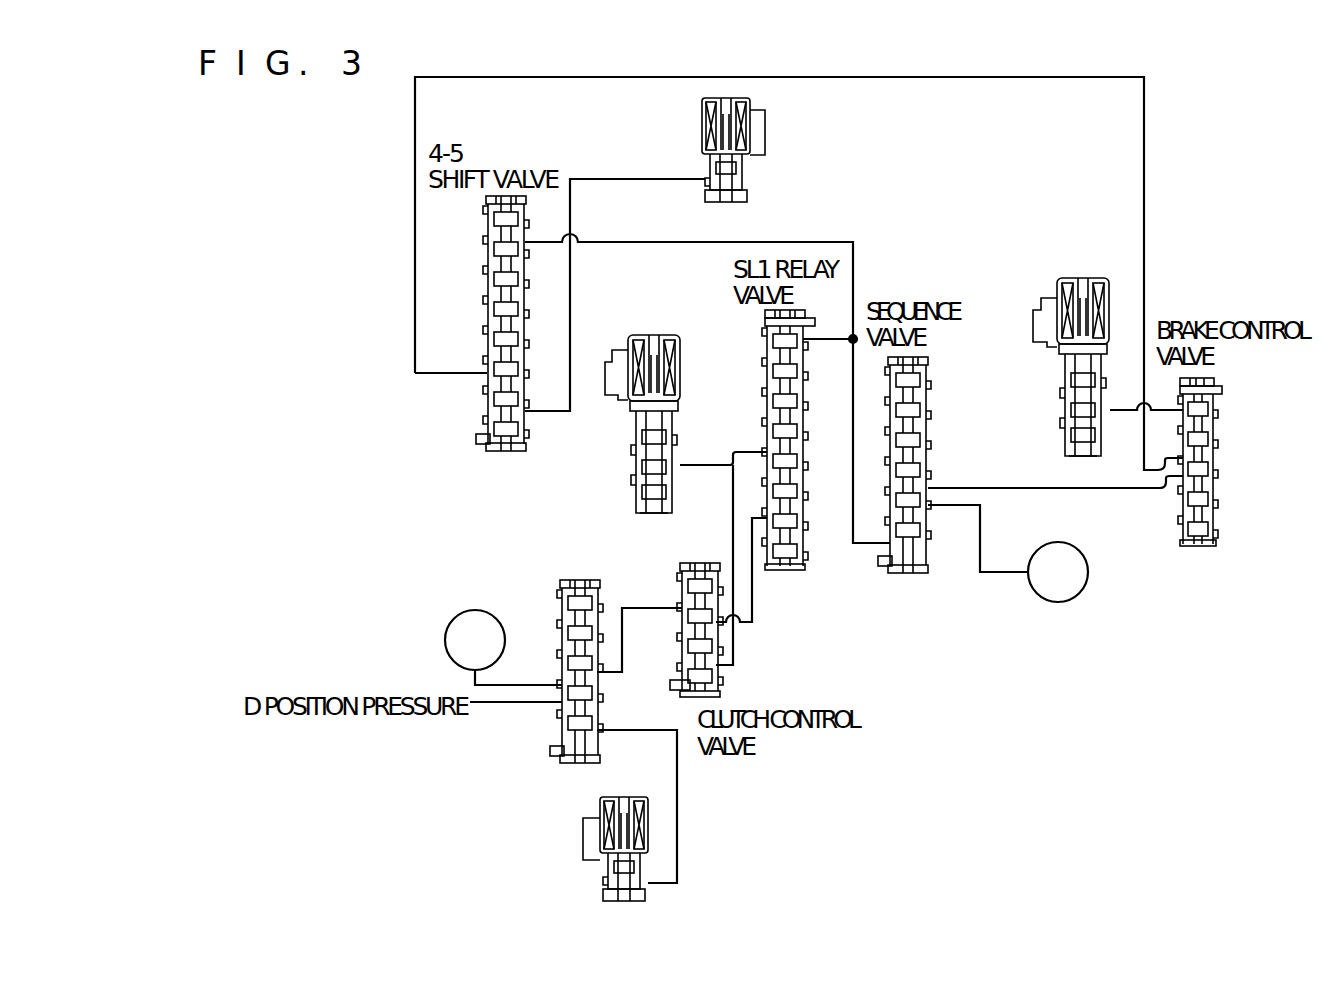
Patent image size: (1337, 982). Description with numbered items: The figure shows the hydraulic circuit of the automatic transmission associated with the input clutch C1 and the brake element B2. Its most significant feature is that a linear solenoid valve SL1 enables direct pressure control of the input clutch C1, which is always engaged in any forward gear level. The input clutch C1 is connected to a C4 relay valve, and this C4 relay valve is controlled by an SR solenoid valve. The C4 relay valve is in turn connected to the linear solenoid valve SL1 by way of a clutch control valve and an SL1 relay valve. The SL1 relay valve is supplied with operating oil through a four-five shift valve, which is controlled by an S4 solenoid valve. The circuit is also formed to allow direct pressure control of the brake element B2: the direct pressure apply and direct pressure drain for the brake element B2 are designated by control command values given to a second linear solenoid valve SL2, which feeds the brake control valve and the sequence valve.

The input clutch C1 is at (503, 647).
The brake element B2 is at (1058, 572).
The C4 relay valve C4 is at (564, 654).
The S4 solenoid valve S4 is at (843, 150).
The SR solenoid valve SR is at (506, 849).
The linear solenoid valve SL1 is at (648, 382).
The linear solenoid valve SL2 is at (1045, 338).